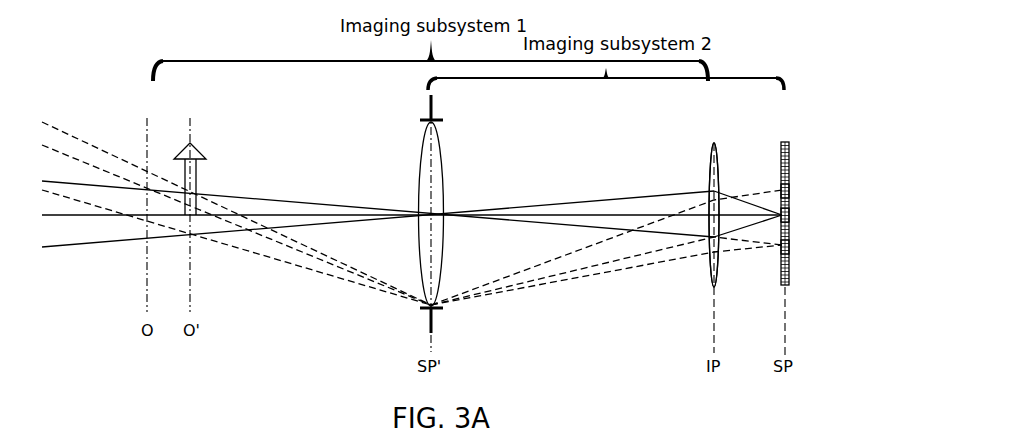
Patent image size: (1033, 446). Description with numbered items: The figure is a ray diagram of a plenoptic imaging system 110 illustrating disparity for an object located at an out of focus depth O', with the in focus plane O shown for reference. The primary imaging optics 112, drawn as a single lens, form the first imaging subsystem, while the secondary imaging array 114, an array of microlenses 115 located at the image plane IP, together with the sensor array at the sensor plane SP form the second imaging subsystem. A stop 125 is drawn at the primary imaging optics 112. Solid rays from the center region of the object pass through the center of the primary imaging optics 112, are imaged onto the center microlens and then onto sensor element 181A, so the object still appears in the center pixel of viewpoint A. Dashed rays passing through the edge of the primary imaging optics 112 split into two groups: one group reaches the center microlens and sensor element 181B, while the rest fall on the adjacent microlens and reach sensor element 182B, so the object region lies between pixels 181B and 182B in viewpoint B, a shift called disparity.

The plenoptic imaging system 110 is at (796, 131).
The primary imaging optics 112 is at (424, 152).
The secondary imaging array 114 is at (730, 146).
The microlens 115 is at (709, 177).
The aperture stop 125 is at (445, 150).
The sensor element 181A is at (790, 214).
The sensor element 181B is at (790, 193).
The sensor element 182B is at (790, 246).